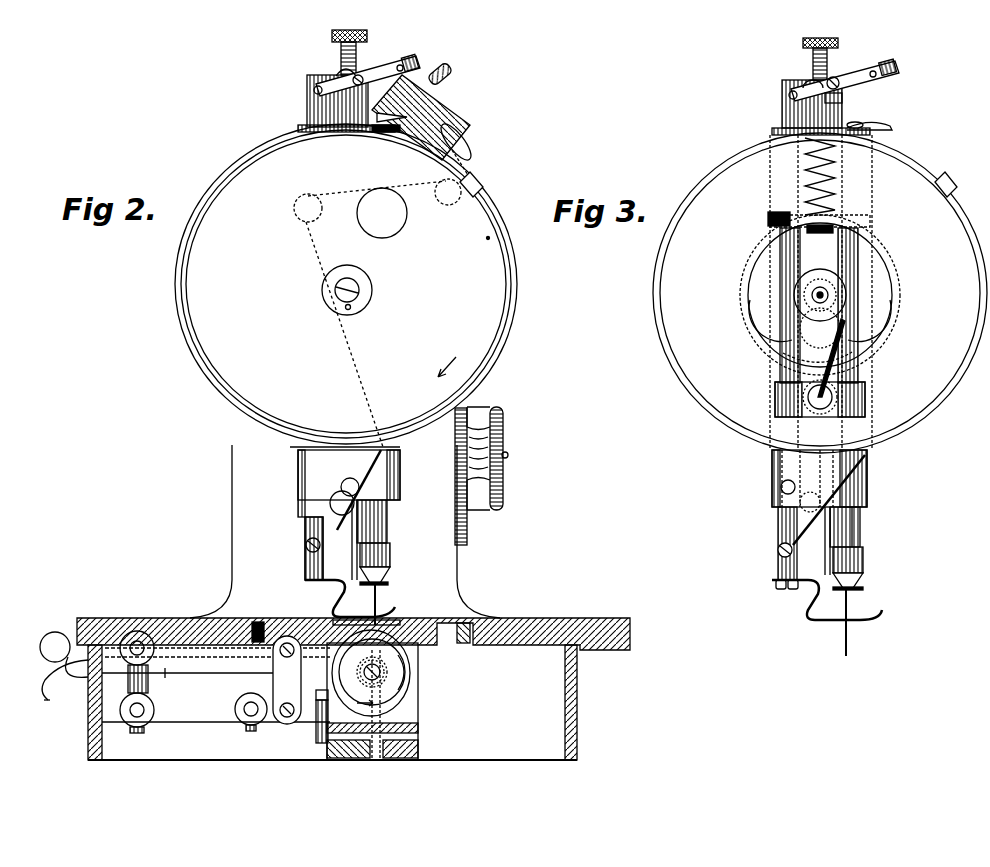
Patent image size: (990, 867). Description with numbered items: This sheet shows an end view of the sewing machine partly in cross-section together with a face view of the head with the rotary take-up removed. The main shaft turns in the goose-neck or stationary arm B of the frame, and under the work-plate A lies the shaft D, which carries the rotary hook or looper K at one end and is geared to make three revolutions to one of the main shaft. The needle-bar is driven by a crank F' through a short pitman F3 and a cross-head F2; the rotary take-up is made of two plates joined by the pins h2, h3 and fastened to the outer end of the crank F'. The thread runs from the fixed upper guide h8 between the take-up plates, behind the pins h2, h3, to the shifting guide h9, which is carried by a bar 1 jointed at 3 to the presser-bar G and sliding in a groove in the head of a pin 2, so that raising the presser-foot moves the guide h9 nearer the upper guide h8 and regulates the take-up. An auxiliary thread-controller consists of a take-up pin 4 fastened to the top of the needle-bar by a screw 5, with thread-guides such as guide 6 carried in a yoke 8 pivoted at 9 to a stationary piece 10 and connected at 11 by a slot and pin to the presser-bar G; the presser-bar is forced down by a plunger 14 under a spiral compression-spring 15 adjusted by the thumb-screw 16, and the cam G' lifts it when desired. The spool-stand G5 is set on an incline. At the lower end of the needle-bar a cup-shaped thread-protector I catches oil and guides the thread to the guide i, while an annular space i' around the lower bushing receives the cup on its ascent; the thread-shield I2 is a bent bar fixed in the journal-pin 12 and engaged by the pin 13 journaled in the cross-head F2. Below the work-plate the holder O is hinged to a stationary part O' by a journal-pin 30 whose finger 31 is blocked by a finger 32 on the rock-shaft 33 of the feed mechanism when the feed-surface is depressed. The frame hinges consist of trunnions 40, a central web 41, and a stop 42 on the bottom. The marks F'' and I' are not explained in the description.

In FIG. 2, the work-plate A is at (195, 618).
In FIG. 3, the work-plate A is at (820, 293).
In FIG. 2, the goose-neck or stationary arm B is at (349, 512).
In FIG. 2, the presser-bar G is at (338, 346).
In FIG. 3, the presser-bar G is at (810, 107).
In FIG. 2, the cam G' is at (323, 548).
In FIG. 3, the cam G' is at (810, 563).
In FIG. 2, the spool-stand G5 is at (424, 120).
In FIG. 2, the crank F' is at (383, 521).
In FIG. 3, the crank F' is at (834, 407).
In FIG. 3, the cam F'' is at (781, 329).
In FIG. 3, the cross-head F2 is at (775, 398).
In FIG. 3, the pitman F3 is at (800, 360).
In FIG. 2, the thread-protector I is at (385, 555).
In FIG. 3, the thread-protector I is at (855, 560).
In FIG. 2, the needle I' is at (392, 605).
In FIG. 3, the needle I' is at (859, 623).
In FIG. 2, the thread-shield I2 is at (352, 555).
In FIG. 3, the thread-shield I2 is at (827, 548).
In FIG. 2, the thread-guide i is at (380, 577).
In FIG. 3, the thread-guide i is at (852, 587).
In FIG. 3, the annular space i' is at (868, 517).
In FIG. 2, the take-up pin h2 is at (446, 205).
In FIG. 2, the take-up pin h3 is at (315, 218).
In FIG. 2, the upper thread-guide h8 is at (479, 184).
In FIG. 3, the upper thread-guide h8 is at (951, 185).
In FIG. 2, the shifting thread-guide h9 is at (395, 461).
In FIG. 3, the shifting thread-guide h9 is at (868, 462).
In FIG. 2, the rotary hook K is at (371, 673).
In FIG. 2, the shaft D is at (378, 670).
In FIG. 2, the holder O is at (388, 717).
In FIG. 2, the stationary part of the frame O' is at (388, 746).
In FIG. 2, the sliding bar 1 is at (372, 452).
In FIG. 3, the sliding bar 1 is at (835, 490).
In FIG. 2, the pin 2 is at (330, 503).
In FIG. 3, the pin 2 is at (775, 508).
In FIG. 2, the joint 3 is at (306, 545).
In FIG. 3, the joint 3 is at (778, 551).
In FIG. 2, the take-up pin 4 is at (387, 132).
In FIG. 3, the take-up pin 4 is at (883, 124).
In FIG. 2, the screw 5 is at (377, 118).
In FIG. 3, the screw 5 is at (857, 123).
In FIG. 2, the thread-guide 6 is at (402, 70).
In FIG. 3, the thread-guide 6 is at (881, 64).
In FIG. 2, the adjustable yoke 8 is at (353, 81).
In FIG. 3, the adjustable yoke 8 is at (843, 79).
In FIG. 2, the pivot 9 is at (350, 76).
In FIG. 3, the pivot 9 is at (812, 78).
In FIG. 3, the stationary piece 10 is at (840, 99).
In FIG. 2, the slot-and-pin connection 11 is at (313, 90).
In FIG. 3, the slot-and-pin connection 11 is at (788, 95).
In FIG. 2, the journal-pin 12 is at (342, 483).
In FIG. 3, the journal-pin 12 is at (783, 483).
In FIG. 3, the pin 13 is at (832, 397).
In FIG. 3, the plunger 14 is at (870, 216).
In FIG. 3, the spiral compression-spring 15 is at (836, 170).
In FIG. 2, the thumb-screw 16 is at (348, 30).
In FIG. 3, the thumb-screw 16 is at (823, 38).
In FIG. 2, the journal-pin 30 is at (410, 718).
In FIG. 2, the finger 31 is at (322, 718).
In FIG. 2, the finger 32 is at (298, 702).
In FIG. 2, the rock-shaft 33 is at (237, 713).
In FIG. 2, the trunnions 40 is at (45, 640).
In FIG. 2, the central web 41 is at (65, 678).
In FIG. 2, the stop 42 is at (47, 694).